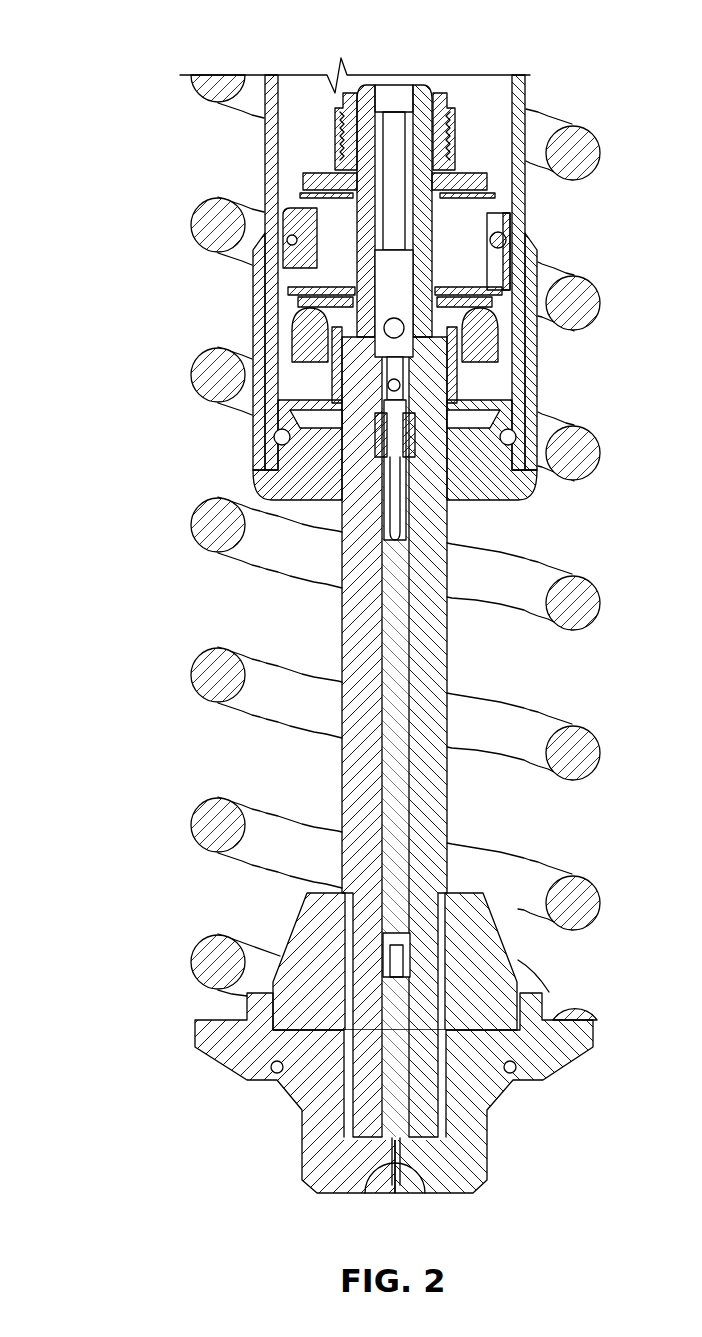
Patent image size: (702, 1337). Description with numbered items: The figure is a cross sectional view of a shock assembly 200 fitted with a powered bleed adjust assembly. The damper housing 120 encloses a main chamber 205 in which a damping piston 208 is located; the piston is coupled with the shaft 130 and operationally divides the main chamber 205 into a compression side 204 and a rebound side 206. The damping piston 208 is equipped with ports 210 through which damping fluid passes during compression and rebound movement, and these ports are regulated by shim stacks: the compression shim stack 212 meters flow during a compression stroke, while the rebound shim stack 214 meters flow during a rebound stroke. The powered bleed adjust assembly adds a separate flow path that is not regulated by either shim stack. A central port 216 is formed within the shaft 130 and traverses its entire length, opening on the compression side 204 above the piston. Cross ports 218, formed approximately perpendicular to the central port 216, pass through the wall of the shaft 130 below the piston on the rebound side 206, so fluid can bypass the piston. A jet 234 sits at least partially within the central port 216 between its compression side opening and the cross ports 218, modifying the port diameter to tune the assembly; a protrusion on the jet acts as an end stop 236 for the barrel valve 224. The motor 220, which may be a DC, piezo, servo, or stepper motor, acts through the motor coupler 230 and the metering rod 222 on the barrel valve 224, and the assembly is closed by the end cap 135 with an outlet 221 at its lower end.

The fuel injector assembly 200 is at (69, 43).
The damper housing 120 is at (265, 152).
The shaft 130 is at (355, 783).
The end cap 135 is at (473, 1122).
The compression side 204 is at (498, 98).
The main chamber 205 is at (293, 140).
The rebound side 206 is at (537, 350).
The damping piston 208 is at (503, 235).
The ports 210 is at (482, 262).
The compression shim stack 212 is at (537, 292).
The rebound shim stack 214 is at (447, 197).
The central port 216 is at (398, 142).
The cross ports 218 is at (358, 332).
The motor 220 is at (392, 1092).
The outlet orifice 221 is at (398, 1186).
The metering rod 222 is at (398, 620).
The barrel valve 224 is at (378, 395).
The motor coupler 230 is at (405, 968).
The jet 234 is at (420, 92).
The end stop 236 is at (380, 262).